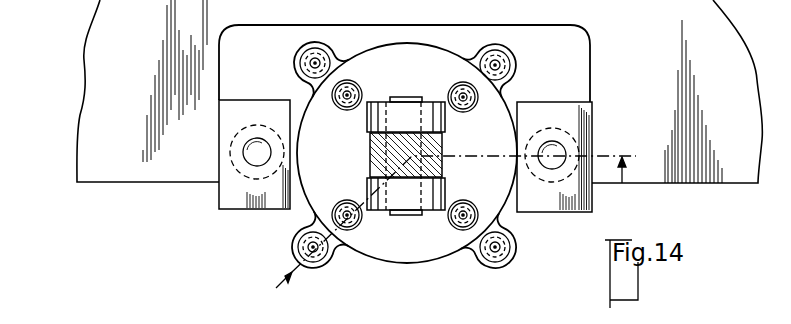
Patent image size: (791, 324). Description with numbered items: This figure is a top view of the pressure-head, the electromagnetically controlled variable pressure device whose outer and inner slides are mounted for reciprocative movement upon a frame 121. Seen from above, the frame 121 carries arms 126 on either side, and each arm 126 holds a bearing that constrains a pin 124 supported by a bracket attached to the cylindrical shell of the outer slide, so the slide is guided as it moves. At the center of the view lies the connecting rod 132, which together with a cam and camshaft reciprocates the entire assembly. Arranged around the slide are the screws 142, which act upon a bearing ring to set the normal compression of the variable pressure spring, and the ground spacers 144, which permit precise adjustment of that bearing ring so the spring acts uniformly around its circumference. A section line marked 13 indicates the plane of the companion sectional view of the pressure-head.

The frame 121 is at (100, 182).
The pin 124 is at (244, 148).
The arm 126 is at (224, 210).
The connecting rod 132 is at (443, 150).
The screws 142 is at (358, 92).
The ground spacers 144 is at (340, 102).
The section line 13- 13 is at (464, 236).